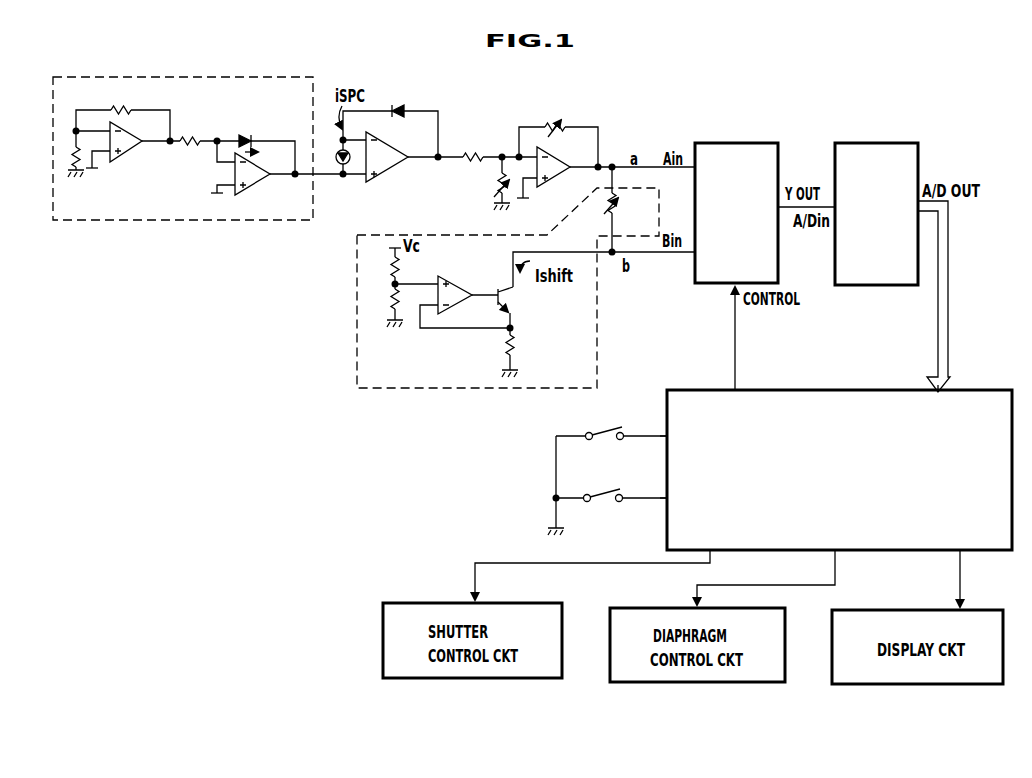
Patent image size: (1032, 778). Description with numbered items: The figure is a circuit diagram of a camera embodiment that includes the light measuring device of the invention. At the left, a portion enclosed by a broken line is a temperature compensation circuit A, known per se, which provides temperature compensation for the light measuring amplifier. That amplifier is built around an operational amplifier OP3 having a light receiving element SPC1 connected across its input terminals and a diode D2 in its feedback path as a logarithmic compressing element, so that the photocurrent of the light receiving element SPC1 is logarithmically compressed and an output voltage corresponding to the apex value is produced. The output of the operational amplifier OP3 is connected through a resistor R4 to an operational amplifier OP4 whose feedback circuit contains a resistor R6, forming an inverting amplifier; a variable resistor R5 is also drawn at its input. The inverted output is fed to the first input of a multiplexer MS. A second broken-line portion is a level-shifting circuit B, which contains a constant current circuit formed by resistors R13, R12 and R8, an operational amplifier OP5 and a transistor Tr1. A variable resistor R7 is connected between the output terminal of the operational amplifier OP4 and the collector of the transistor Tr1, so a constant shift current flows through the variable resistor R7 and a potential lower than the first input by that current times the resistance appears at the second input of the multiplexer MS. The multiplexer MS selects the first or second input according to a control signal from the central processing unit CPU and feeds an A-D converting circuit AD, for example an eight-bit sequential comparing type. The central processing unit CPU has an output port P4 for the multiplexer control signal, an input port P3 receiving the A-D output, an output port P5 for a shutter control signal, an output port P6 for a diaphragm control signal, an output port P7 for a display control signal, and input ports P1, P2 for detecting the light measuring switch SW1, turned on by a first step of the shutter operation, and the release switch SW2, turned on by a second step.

The temperature compensation circuit A is at (153, 220).
The level-shifting circuit B is at (452, 388).
The light receiving element SPC1 is at (347, 167).
The operational amplifier OP3 is at (397, 168).
The operational amplifier OP4 is at (559, 178).
The operational amplifier OP5 is at (458, 285).
The diode D2 is at (397, 105).
The resistor R4 is at (473, 154).
The variable resistor R5 is at (497, 182).
The resistor R6 is at (556, 121).
The variable resistor R7 is at (617, 208).
The resistor R8 is at (519, 342).
The resistor R12 is at (390, 265).
The resistor R13 is at (390, 300).
The transistor Tr1 is at (515, 298).
The light measuring switch SW1 is at (604, 431).
The release switch SW2 is at (602, 491).
The multiplexer MS is at (733, 143).
The A-D converting circuit AD is at (876, 143).
The central processing unit CPU is at (839, 470).
The input port P1 is at (675, 436).
The input port P2 is at (675, 498).
The input port P3 is at (933, 399).
The output port P4 is at (730, 350).
The output port P5 is at (598, 561).
The output port P6 is at (769, 564).
The output port P7 is at (958, 565).